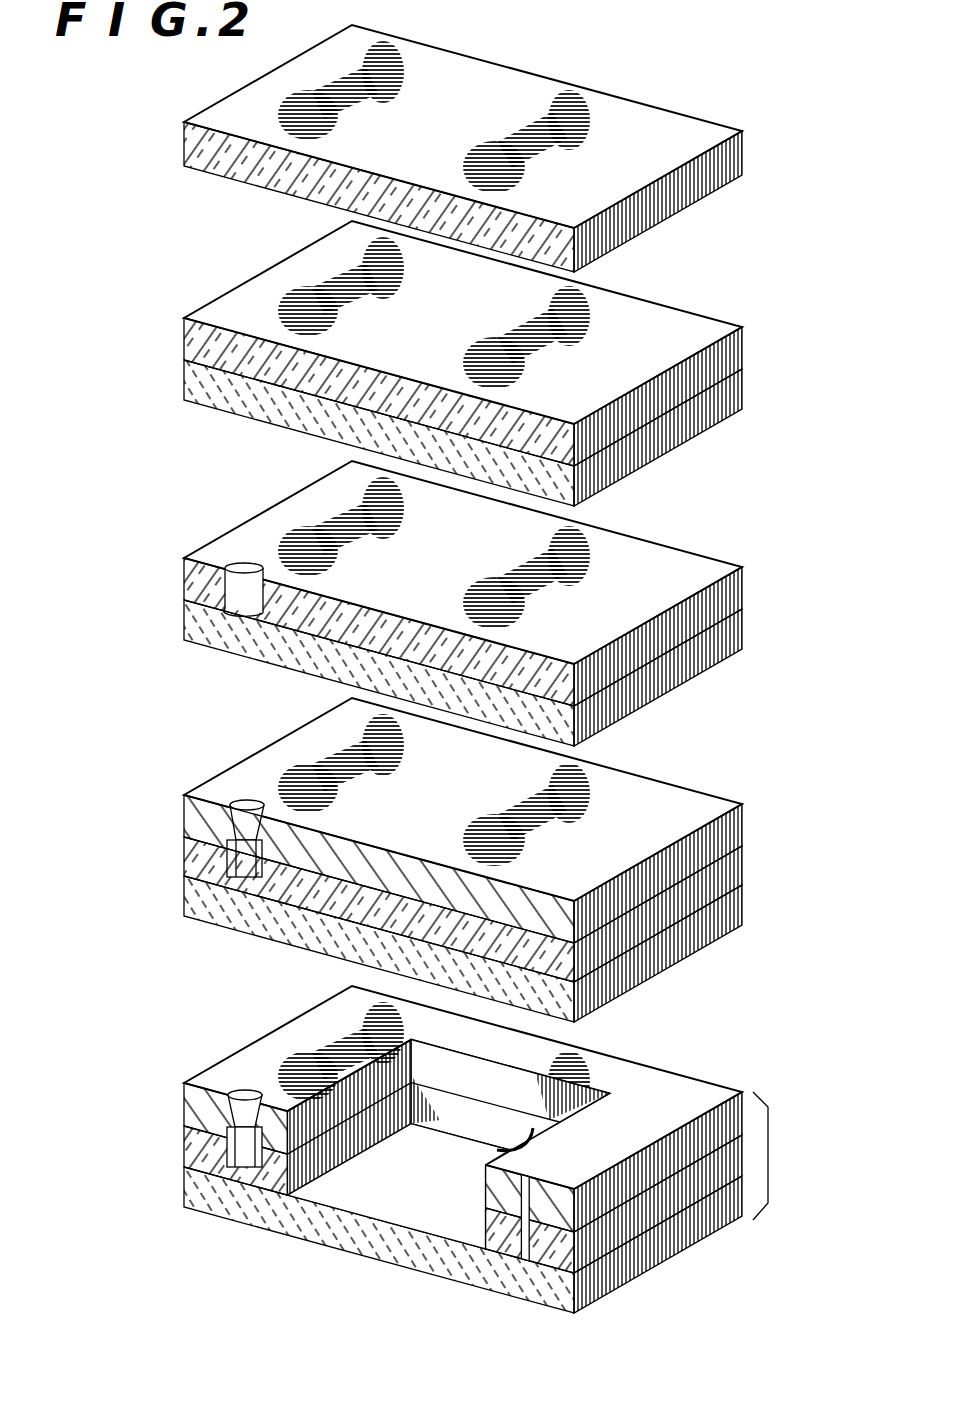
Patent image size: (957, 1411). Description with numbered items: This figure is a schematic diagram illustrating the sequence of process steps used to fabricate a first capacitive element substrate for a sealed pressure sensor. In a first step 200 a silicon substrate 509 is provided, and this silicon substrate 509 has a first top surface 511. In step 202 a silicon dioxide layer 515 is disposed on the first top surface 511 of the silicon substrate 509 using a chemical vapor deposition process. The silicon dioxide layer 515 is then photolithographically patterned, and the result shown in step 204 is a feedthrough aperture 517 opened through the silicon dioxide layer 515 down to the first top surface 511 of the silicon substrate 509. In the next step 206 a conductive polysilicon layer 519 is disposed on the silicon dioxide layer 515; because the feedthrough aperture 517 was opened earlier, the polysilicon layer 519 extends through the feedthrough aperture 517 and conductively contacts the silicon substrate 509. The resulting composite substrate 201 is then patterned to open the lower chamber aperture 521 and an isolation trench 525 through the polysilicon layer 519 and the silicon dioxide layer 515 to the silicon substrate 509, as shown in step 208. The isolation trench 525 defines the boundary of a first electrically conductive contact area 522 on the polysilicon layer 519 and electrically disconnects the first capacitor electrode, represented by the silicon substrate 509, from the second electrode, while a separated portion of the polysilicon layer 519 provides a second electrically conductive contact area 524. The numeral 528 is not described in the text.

The first step 200 is at (725, 101).
The step 202 is at (725, 291).
The step 204 is at (717, 534).
The step 206 is at (721, 761).
The step 208 is at (753, 1071).
The composite substrate 201 is at (787, 1156).
The silicon substrate 509 is at (742, 156).
The first top surface 511 is at (663, 123).
The silicon dioxide layer 515 is at (742, 345).
The feedthrough aperture 517 is at (247, 583).
The polysilicon layer 519 is at (742, 818).
The lower chamber aperture 521 is at (398, 1180).
The first electrically conductive contact area 522 is at (500, 1152).
The second electrically conductive contact area 524 is at (237, 1087).
The isolation trench 525 is at (505, 1186).
The via conductor 528 is at (512, 1253).